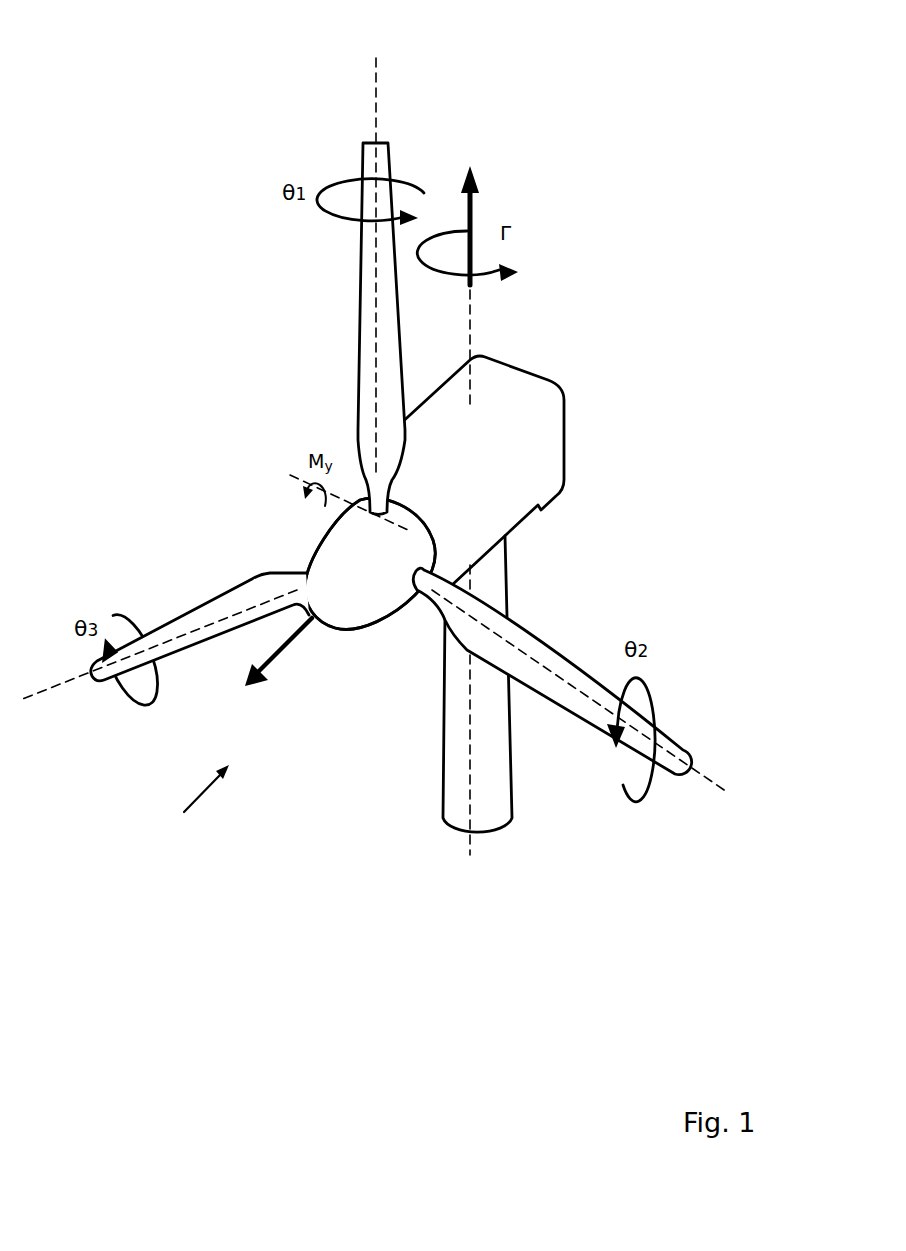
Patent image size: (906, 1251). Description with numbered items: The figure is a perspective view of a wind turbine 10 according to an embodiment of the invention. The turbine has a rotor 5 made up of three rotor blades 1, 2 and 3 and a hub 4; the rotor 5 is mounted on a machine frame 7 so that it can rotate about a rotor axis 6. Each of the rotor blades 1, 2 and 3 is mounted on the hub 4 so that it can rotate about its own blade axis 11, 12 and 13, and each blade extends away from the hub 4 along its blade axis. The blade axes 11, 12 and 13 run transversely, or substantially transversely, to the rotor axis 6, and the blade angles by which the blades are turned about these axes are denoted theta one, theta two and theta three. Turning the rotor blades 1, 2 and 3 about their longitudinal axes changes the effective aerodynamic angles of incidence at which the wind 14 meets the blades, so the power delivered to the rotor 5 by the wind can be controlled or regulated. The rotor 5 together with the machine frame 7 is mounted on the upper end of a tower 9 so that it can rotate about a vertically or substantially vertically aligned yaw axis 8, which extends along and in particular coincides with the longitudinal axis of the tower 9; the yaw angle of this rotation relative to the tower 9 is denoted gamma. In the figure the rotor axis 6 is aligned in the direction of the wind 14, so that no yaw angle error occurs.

The first rotor blade 1 is at (358, 346).
The second rotor blade 2 is at (551, 642).
The third rotor blade 3 is at (216, 598).
The hub 4 is at (397, 622).
The rotor 5 is at (362, 634).
The rotor axis 6 is at (283, 665).
The machine frame 7 is at (566, 435).
The yaw axis 8 is at (470, 325).
The tower 9 is at (444, 795).
The wind turbine 10 is at (138, 76).
The blade axis 11 is at (376, 77).
The blade axis 12 is at (705, 778).
The blade axis 13 is at (42, 693).
The wind 14 is at (200, 798).